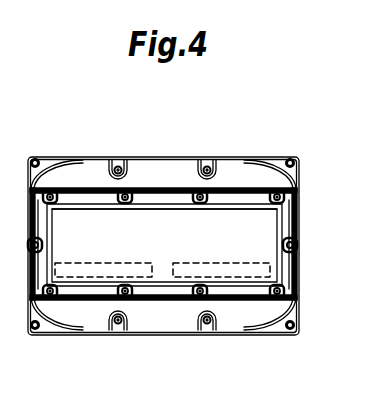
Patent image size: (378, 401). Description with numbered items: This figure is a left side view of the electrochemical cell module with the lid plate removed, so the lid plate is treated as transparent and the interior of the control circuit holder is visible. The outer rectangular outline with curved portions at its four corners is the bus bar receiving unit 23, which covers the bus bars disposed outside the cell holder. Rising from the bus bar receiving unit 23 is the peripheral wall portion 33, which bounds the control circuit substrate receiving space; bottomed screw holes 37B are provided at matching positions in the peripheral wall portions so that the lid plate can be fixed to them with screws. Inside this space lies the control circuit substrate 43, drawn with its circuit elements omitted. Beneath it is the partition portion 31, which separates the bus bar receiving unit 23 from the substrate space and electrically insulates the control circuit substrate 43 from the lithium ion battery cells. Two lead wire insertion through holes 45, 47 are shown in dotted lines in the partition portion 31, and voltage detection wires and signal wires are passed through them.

The bus bar receiving unit 23 is at (145, 176).
The partition portion 31 is at (188, 207).
The peripheral wall portion 33 is at (287, 267).
The bottomed screw holes 37B is at (118, 190).
The control circuit substrate 43 is at (270, 213).
The lead wire insertion through hole 45 is at (185, 272).
The lead wire insertion through hole 47 is at (145, 272).